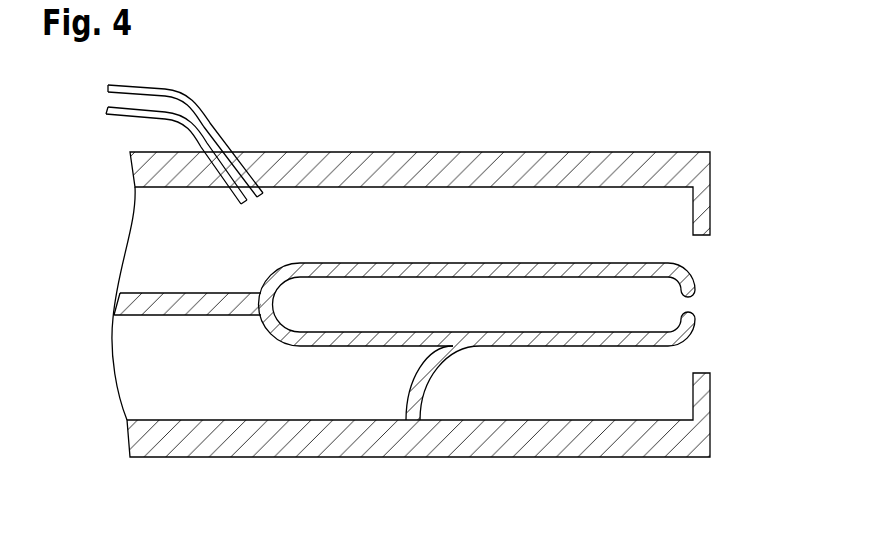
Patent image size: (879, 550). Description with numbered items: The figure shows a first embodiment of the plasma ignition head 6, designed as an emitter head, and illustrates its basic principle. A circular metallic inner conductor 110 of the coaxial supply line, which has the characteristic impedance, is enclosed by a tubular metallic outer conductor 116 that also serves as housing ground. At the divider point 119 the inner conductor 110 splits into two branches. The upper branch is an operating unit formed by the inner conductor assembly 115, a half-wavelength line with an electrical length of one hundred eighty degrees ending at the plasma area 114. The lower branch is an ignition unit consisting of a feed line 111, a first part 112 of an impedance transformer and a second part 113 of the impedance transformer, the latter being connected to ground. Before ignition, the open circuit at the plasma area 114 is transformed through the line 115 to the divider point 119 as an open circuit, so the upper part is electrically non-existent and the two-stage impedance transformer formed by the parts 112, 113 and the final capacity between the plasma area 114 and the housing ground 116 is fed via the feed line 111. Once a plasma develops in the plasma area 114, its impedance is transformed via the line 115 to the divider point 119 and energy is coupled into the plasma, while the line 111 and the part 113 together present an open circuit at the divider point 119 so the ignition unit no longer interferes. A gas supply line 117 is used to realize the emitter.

The plasma ignition head 6 is at (690, 105).
The inner conductor 110 is at (195, 305).
The feed line 111 is at (350, 340).
The first part of impedance transformer 112 is at (590, 340).
The second part of impedance transformer 113 is at (422, 389).
The plasma area 114 is at (698, 303).
The inner conductor assembly 115 is at (480, 270).
The outer conductor 116 is at (408, 163).
The gas supply line 117 is at (182, 115).
The divider point 119 is at (262, 304).